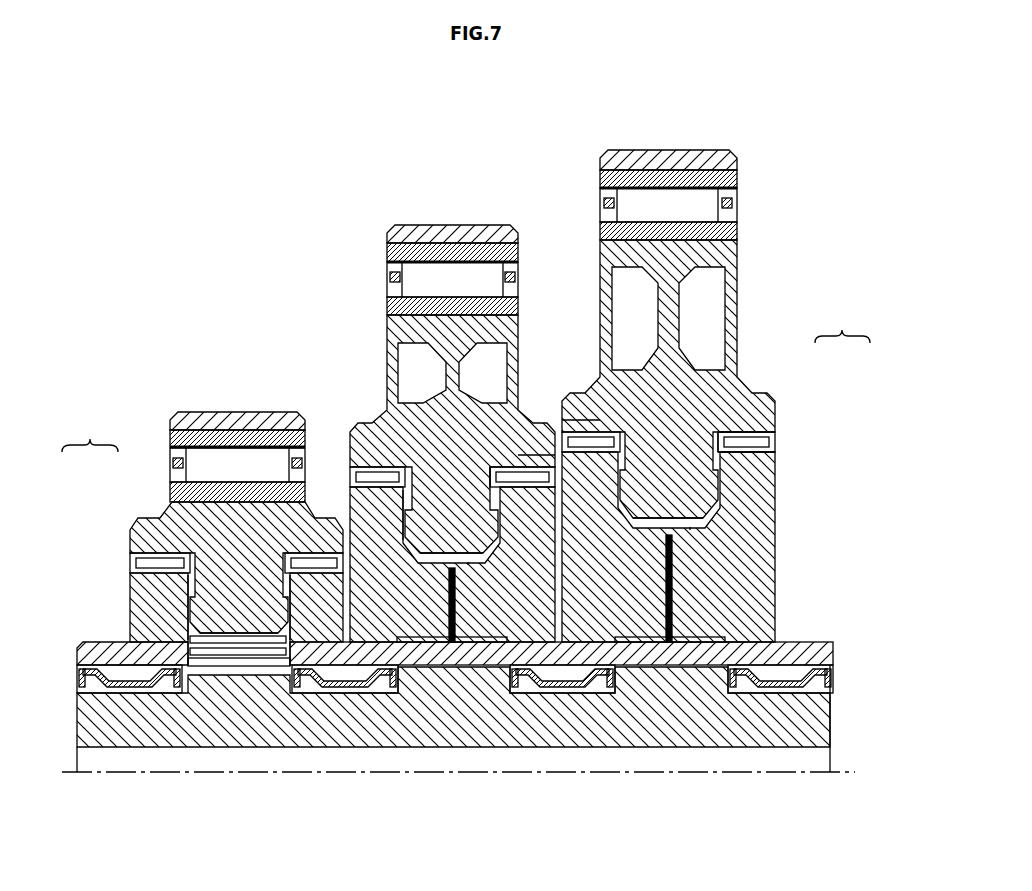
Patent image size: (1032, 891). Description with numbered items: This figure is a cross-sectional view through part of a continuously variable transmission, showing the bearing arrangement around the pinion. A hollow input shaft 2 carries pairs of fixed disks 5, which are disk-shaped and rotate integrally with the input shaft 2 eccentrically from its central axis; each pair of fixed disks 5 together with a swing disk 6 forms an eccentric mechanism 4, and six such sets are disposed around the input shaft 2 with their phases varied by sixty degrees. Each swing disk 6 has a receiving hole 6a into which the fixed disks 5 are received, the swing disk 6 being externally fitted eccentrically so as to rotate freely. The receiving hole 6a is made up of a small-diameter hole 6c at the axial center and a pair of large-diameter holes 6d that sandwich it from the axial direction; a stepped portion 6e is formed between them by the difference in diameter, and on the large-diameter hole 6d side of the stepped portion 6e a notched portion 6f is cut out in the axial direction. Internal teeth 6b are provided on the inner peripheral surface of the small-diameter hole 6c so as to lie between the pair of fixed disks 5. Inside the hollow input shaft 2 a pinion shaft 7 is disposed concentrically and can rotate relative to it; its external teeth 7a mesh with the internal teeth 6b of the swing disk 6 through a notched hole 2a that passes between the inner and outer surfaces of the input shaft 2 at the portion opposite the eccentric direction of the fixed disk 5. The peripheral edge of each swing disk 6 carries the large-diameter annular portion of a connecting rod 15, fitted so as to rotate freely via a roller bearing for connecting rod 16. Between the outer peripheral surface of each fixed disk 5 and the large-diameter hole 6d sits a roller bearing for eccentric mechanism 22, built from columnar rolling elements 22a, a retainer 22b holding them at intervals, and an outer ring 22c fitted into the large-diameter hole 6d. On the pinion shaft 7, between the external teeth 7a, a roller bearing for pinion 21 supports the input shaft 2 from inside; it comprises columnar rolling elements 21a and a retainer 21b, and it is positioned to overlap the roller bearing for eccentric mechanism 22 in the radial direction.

The input shaft 2 is at (803, 653).
The notched hole 2a is at (208, 660).
The eccentric mechanism 4 is at (466, 380).
The fixed disk 5 is at (130, 607).
The swing disk 6 is at (148, 527).
The receiving hole 6a is at (185, 628).
The internal teeth 6b is at (237, 633).
The small-diameter hole 6c is at (242, 650).
The large-diameter hole 6d is at (492, 478).
The stepped portion 6e is at (293, 620).
The notched portion 6f is at (520, 465).
The pinion shaft 7 is at (735, 740).
The external teeth 7a is at (260, 670).
The connecting rod 15 is at (256, 412).
The roller bearing for connecting rod 16 is at (220, 463).
The roller bearing for pinion 21 is at (130, 690).
The rolling element 21a is at (783, 690).
The retainer 21b is at (820, 690).
The roller bearing for eccentric mechanism 22 is at (165, 565).
The rolling element 22a is at (750, 435).
The retainer 22b is at (773, 450).
The outer ring 22c is at (742, 432).